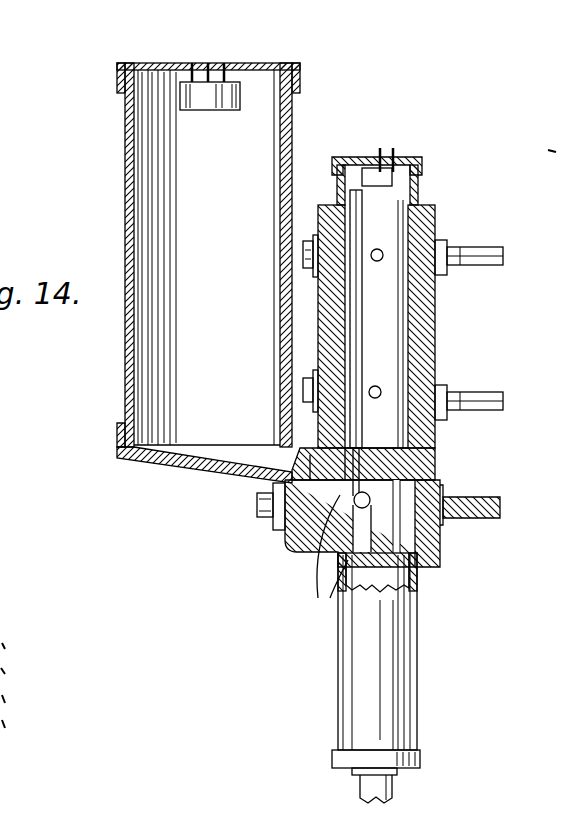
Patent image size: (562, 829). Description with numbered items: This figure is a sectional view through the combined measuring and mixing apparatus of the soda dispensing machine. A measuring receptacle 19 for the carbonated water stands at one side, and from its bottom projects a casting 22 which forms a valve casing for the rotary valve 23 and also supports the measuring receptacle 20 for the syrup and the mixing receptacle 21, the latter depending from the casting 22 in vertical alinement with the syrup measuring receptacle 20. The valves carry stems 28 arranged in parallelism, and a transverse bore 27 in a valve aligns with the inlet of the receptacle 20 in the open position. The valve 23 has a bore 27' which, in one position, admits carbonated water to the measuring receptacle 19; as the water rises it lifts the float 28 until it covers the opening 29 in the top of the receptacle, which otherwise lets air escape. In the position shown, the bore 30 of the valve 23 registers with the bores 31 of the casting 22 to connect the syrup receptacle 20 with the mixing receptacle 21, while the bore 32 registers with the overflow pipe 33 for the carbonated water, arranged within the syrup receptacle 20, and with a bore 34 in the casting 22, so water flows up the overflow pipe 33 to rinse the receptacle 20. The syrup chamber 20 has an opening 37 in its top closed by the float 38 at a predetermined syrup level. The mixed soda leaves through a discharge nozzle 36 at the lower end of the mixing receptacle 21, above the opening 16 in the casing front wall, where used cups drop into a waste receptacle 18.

The opening 16 is at (362, 428).
The waste receptacle 18 is at (262, 573).
The measuring receptacle for the carbonated water 19 is at (265, 148).
The measuring receptacle for the syrup 20 is at (385, 345).
The mixing receptacle 21 is at (385, 660).
The casting 22 is at (440, 462).
The rotary valve 23 is at (410, 490).
The transverse bore 27 is at (384, 305).
The bore 27' is at (323, 555).
The valve stem 28 is at (209, 100).
The opening 29 is at (212, 68).
The bore 30 is at (436, 528).
The bores 31 is at (438, 452).
The bore 32 is at (345, 477).
The overflow pipe 33 is at (360, 316).
The bore 34 is at (377, 585).
The discharge nozzle 36 is at (395, 788).
The opening 37 is at (384, 160).
The float 38 is at (400, 176).